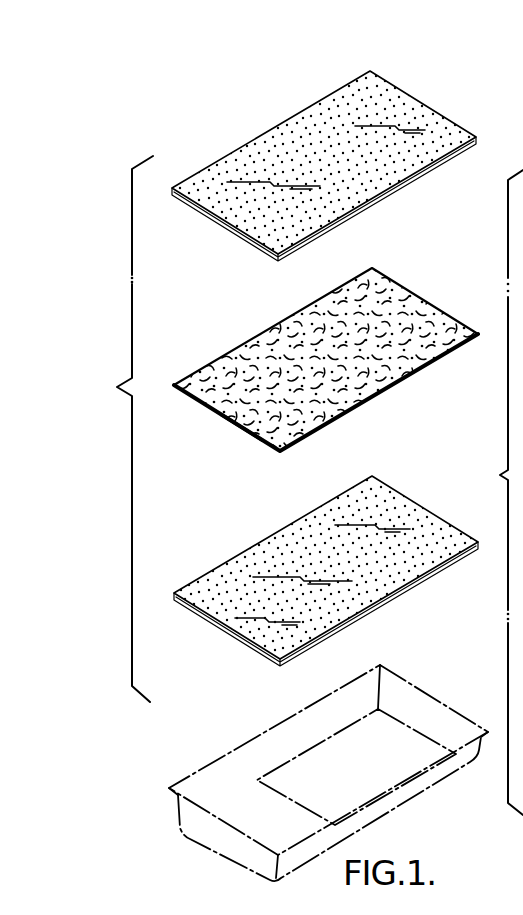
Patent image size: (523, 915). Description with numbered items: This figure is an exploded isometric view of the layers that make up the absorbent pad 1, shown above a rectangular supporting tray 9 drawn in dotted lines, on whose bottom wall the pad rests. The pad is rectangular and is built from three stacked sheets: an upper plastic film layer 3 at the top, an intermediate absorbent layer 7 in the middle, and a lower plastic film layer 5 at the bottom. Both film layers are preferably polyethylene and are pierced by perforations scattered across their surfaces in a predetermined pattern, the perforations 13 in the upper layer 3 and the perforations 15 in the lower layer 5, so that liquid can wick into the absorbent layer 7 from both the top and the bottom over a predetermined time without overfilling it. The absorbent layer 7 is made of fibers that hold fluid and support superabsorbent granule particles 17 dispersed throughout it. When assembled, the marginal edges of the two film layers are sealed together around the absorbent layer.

The absorbent pad 1 is at (108, 390).
The upper plastic film layer 3 is at (397, 88).
The perforations 13 is at (325, 105).
The intermediate absorbent layer 7 is at (408, 295).
The superabsorbent granule particles 17 is at (248, 427).
The lower plastic film layer 5 is at (405, 500).
The perforations 15 is at (288, 530).
The supporting tray 9 is at (244, 851).